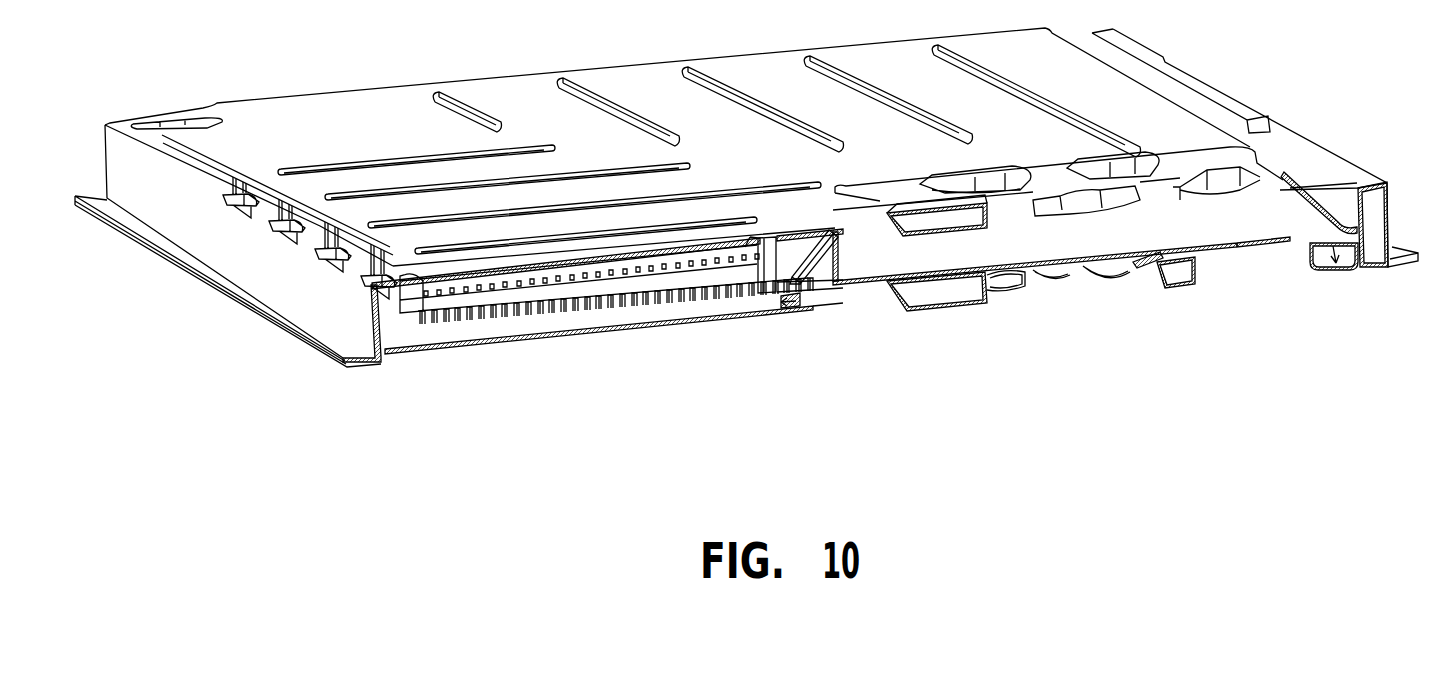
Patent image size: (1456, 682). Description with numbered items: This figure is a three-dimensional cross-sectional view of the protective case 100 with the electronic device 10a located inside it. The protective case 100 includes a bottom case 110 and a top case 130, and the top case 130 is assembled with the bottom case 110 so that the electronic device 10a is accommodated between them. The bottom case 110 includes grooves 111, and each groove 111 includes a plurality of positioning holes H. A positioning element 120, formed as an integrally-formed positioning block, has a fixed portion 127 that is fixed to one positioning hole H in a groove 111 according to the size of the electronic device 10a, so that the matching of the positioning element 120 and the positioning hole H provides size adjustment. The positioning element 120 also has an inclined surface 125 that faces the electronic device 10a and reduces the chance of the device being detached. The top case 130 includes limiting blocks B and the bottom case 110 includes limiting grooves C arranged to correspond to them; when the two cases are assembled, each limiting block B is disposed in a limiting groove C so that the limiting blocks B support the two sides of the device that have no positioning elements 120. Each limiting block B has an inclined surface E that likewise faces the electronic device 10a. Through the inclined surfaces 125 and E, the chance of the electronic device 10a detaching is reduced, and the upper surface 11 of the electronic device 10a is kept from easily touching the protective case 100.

The protective case 100 is at (1260, 470).
The top case 130 is at (1290, 152).
The positioning element 120 is at (763, 272).
The groove 111 is at (684, 296).
The inclined surface 125 is at (830, 273).
The fixed portion 127 is at (800, 308).
The positioning hole H is at (783, 304).
The bottom case 110 is at (935, 312).
The upper surface 11 is at (1046, 251).
The electronic device 10a is at (1182, 233).
The limiting block B is at (1327, 197).
The limiting groove C is at (1362, 224).
The inclined surface E is at (1302, 226).